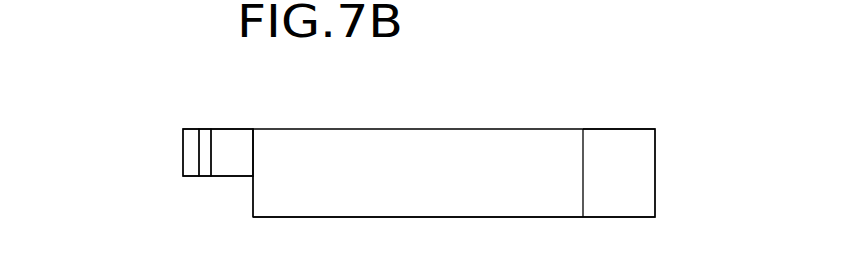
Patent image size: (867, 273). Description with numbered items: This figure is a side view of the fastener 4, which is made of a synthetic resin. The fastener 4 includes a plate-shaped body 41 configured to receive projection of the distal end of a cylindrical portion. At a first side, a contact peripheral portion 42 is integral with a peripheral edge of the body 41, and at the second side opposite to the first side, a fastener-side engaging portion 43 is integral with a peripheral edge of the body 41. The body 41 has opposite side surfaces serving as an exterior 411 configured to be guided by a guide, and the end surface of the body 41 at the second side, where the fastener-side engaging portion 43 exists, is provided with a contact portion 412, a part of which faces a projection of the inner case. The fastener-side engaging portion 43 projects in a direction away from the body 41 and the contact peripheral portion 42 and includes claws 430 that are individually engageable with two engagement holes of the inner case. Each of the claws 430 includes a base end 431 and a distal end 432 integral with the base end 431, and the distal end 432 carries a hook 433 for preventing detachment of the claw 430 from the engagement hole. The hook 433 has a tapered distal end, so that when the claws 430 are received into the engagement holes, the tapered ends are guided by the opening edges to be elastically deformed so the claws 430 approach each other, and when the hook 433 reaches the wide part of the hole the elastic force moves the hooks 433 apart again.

The fastener 4 is at (531, 114).
The body 41 is at (396, 148).
The contact peripheral portion 42 is at (608, 148).
The fastener-side engaging portion 43 is at (169, 160).
The exterior 411 is at (432, 211).
The contact portion 412 is at (251, 155).
The claws 430 is at (115, 170).
The base end 431 is at (228, 162).
The distal end 432 is at (188, 159).
The hook 433 is at (201, 131).